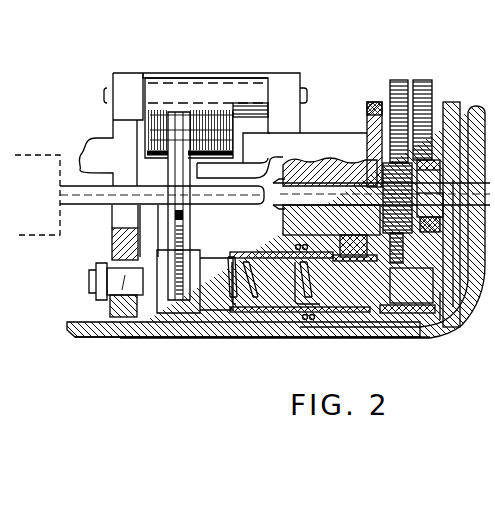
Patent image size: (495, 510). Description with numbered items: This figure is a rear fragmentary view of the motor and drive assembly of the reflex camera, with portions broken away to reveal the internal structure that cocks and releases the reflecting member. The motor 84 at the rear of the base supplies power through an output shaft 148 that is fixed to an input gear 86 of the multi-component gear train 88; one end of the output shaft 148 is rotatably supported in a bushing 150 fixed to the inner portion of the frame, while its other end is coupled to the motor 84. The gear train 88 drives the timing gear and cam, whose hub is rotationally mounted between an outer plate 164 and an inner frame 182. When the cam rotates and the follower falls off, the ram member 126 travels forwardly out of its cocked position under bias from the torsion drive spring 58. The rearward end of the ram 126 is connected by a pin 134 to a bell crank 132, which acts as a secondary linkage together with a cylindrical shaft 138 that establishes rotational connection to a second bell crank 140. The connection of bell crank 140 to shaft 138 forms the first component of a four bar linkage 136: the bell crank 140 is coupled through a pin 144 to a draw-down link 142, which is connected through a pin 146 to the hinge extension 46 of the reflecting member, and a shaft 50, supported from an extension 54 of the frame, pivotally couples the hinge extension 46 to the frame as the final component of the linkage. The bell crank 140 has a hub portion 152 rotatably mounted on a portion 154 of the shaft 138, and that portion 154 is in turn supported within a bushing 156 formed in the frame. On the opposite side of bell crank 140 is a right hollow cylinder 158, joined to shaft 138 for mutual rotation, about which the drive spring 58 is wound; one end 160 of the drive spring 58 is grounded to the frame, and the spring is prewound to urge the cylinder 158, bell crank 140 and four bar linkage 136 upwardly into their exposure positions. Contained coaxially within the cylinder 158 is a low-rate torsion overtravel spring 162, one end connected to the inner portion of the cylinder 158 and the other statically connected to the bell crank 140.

The hinge extension 46 is at (205, 90).
The shaft 50 is at (306, 104).
The extension 54 is at (300, 72).
The torsion drive spring 58 is at (252, 330).
The motor 84 is at (48, 205).
The input gear 86 is at (398, 80).
The gear train 88 is at (428, 62).
The ram member 126 is at (443, 102).
The bell crank 132 is at (390, 275).
The pin 134 is at (450, 326).
The four bar linkage 136 is at (210, 369).
The shaft 138 is at (385, 285).
The second bell crank 140 is at (220, 328).
The draw-down link 142 is at (184, 240).
The pin 144 is at (155, 322).
The pin 146 is at (235, 135).
The output shaft 148 is at (76, 155).
The bushing 150 is at (330, 175).
The hub portion 152 is at (152, 265).
The shaft portion 154 is at (120, 310).
The bushing 156 is at (110, 245).
The hollow cylinder 158 is at (285, 315).
The spring end 160 is at (295, 250).
The overtravel spring 162 is at (326, 318).
The outer plate 164 is at (476, 108).
The inner frame 182 is at (374, 100).